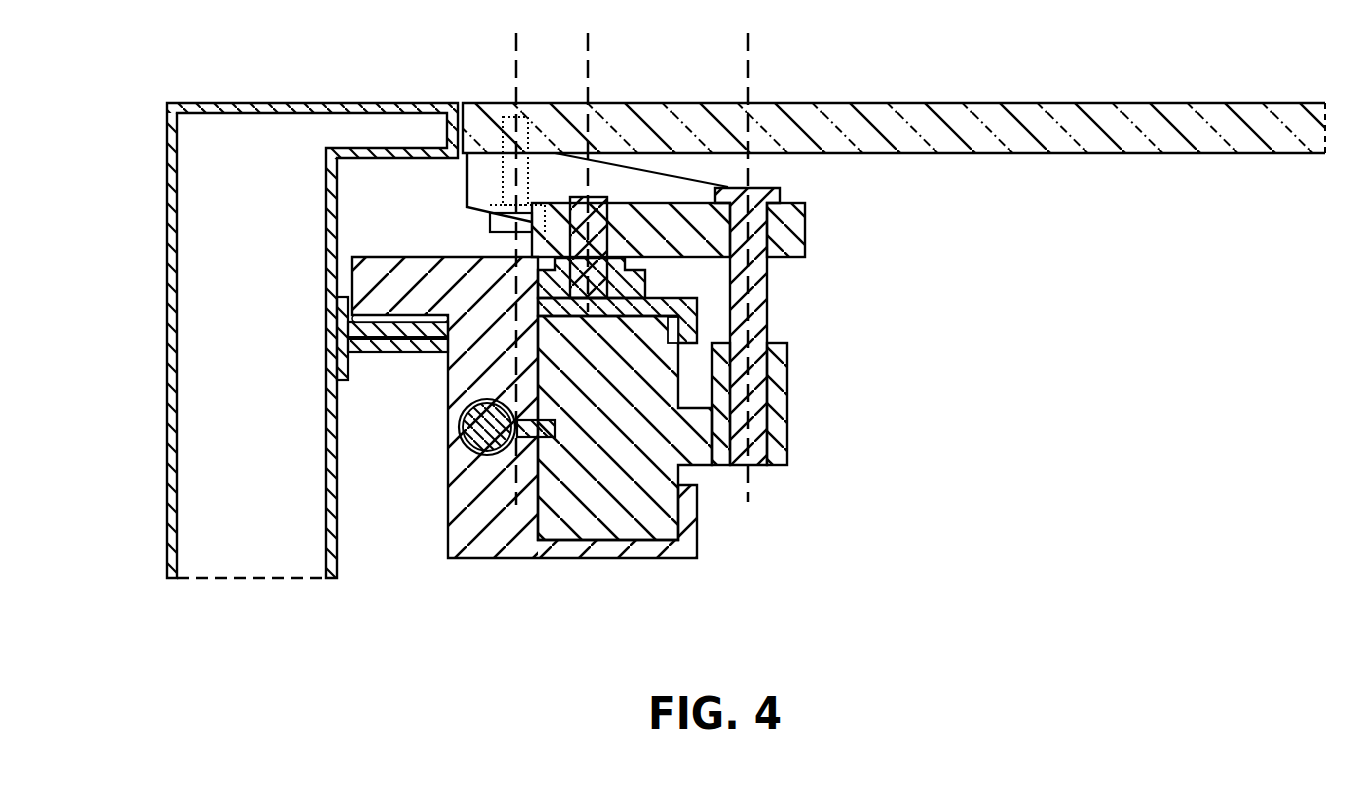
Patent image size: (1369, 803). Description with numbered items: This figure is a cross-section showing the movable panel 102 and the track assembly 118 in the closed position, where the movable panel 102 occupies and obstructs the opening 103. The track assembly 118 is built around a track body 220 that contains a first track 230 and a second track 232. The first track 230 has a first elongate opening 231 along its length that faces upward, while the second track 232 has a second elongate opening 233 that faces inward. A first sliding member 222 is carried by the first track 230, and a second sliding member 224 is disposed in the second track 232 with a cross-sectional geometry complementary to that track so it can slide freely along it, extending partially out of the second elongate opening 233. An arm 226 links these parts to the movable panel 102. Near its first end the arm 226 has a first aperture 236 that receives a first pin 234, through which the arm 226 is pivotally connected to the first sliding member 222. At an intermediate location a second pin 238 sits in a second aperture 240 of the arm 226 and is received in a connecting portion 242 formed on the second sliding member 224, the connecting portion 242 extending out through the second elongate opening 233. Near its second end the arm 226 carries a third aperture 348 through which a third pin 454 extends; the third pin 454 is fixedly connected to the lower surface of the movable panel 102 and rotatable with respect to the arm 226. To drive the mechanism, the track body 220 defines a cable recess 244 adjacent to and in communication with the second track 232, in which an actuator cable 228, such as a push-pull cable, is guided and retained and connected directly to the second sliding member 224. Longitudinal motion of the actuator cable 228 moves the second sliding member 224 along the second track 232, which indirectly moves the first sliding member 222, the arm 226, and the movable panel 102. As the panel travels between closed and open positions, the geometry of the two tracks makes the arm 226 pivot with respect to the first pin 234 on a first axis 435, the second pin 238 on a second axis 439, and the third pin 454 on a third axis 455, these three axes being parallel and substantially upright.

The movable panel 102 is at (1075, 103).
The opening 103 is at (452, 124).
The track assembly 118 is at (710, 578).
The track body 220 is at (228, 102).
The first sliding member 222 is at (645, 294).
The second sliding member 224 is at (582, 540).
The arm 226 is at (467, 165).
The actuator cable 228 is at (465, 400).
The first track 230 is at (530, 283).
The first elongate opening 231 is at (640, 259).
The second track 232 is at (620, 545).
The second elongate opening 233 is at (704, 488).
The first pin 234 is at (585, 197).
The first aperture 236 is at (608, 232).
The second pin 238 is at (772, 322).
The second aperture 240 is at (790, 233).
The connecting portion 242 is at (790, 432).
The cable recess 244 is at (462, 428).
The third aperture 348 is at (503, 193).
The first axis 435 is at (588, 48).
The second axis 439 is at (748, 48).
The third pin 454 is at (490, 218).
The third axis 455 is at (516, 48).